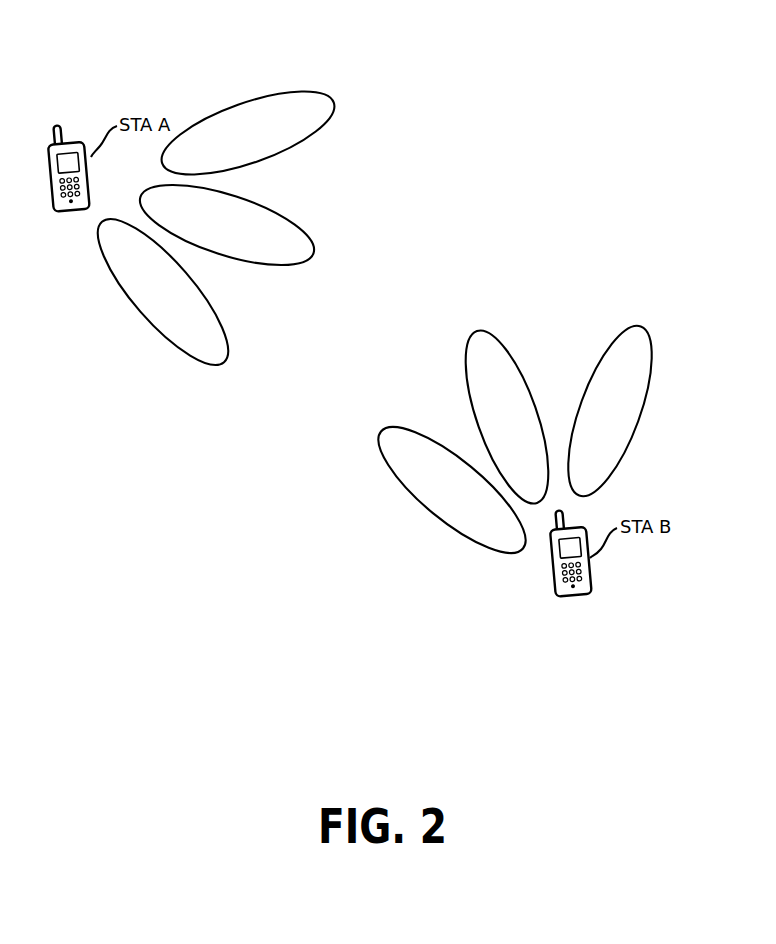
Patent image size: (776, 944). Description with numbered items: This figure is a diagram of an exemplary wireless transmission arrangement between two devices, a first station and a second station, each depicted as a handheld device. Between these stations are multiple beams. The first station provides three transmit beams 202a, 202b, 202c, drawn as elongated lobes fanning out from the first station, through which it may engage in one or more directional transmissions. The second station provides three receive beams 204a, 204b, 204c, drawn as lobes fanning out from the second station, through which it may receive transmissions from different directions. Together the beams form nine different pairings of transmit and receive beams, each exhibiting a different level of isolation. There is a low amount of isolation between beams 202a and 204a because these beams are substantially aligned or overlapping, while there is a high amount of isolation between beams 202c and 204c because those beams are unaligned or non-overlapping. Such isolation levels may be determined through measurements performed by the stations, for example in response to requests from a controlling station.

The transmit beam 202a is at (223, 338).
The transmit beam 202b is at (298, 231).
The transmit beam 202c is at (325, 103).
The receive beam 204a is at (398, 482).
The receive beam 204b is at (493, 338).
The receive beam 204c is at (653, 346).